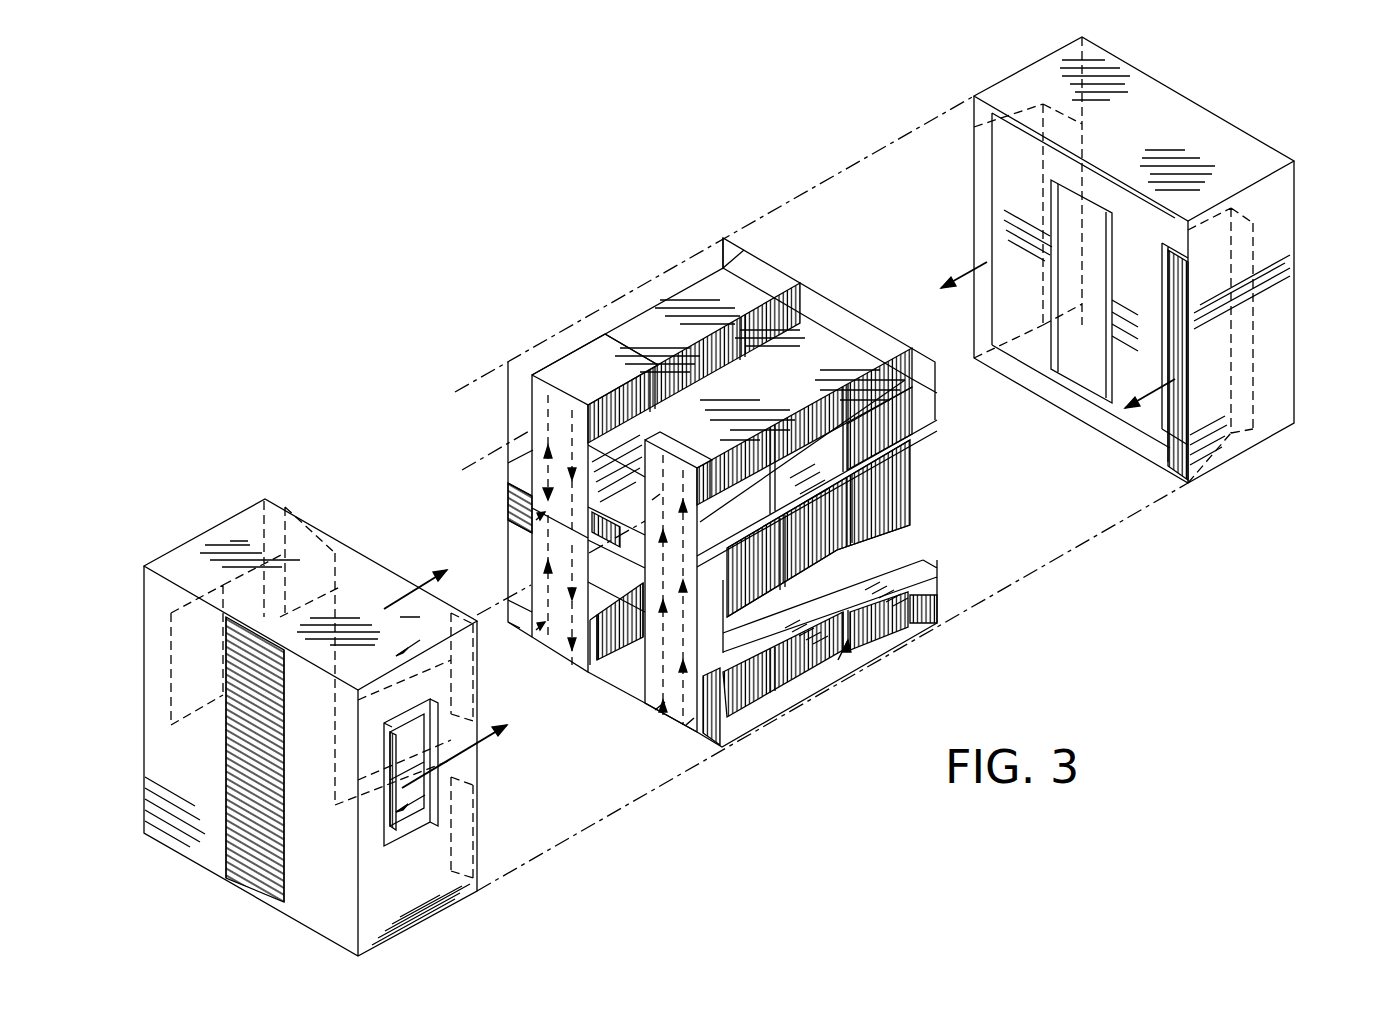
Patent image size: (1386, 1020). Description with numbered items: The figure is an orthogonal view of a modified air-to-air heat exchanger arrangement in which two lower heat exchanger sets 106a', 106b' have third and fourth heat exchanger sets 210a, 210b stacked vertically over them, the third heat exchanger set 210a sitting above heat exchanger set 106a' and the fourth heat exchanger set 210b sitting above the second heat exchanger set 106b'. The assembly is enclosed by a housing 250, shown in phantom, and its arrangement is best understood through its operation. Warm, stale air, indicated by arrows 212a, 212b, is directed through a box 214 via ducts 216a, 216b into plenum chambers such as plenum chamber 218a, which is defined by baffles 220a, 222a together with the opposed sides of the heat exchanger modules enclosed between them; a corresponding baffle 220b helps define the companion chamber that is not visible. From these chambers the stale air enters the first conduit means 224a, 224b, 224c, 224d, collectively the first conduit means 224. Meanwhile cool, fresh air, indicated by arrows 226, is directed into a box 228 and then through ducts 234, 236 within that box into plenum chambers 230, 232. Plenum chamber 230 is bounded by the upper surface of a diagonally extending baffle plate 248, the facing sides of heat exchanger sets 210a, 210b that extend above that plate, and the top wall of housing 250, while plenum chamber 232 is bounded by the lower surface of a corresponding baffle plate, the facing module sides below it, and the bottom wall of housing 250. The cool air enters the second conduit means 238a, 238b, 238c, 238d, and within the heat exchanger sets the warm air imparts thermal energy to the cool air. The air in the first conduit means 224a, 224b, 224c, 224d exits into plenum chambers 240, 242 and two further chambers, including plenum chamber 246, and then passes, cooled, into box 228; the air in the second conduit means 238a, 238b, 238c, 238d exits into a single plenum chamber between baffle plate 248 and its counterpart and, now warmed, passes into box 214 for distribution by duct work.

The box 214 is at (1298, 215).
The duct 216a is at (1253, 368).
The duct 216b is at (998, 102).
The warm stale air 212a is at (1145, 421).
The warm stale air 212b is at (965, 280).
The third heat exchanger set 210a is at (880, 326).
The fourth heat exchanger set 210b is at (780, 264).
The diagonally extending baffle plate 248 is at (810, 335).
The housing 250 is at (656, 272).
The plenum chamber 230 is at (693, 395).
The second conduit means 238a is at (690, 600).
The second conduit means 238b is at (585, 655).
The second conduit means 238c is at (665, 486).
The second conduit means 238d is at (560, 395).
The first conduit means 224a is at (688, 700).
The first conduit means 224b is at (560, 652).
The first conduit means 224c is at (680, 615).
The first conduit means 224d is at (540, 397).
The first conduit means 224 is at (790, 470).
The plenum chamber 246 is at (510, 405).
The baffle 220a is at (885, 425).
The baffle 220b is at (525, 460).
The plenum chamber 218a is at (885, 550).
The plenum chamber 242 is at (520, 572).
The heat exchanger set 106a' is at (878, 652).
The second heat exchanger set 106b' is at (569, 640).
The plenum chamber 232 is at (610, 706).
The plenum chamber 240 is at (740, 655).
The baffle 222a is at (850, 605).
The box 228 is at (170, 552).
The duct 234 is at (250, 559).
The cool fresh air 226 is at (440, 572).
The duct 236 is at (373, 862).